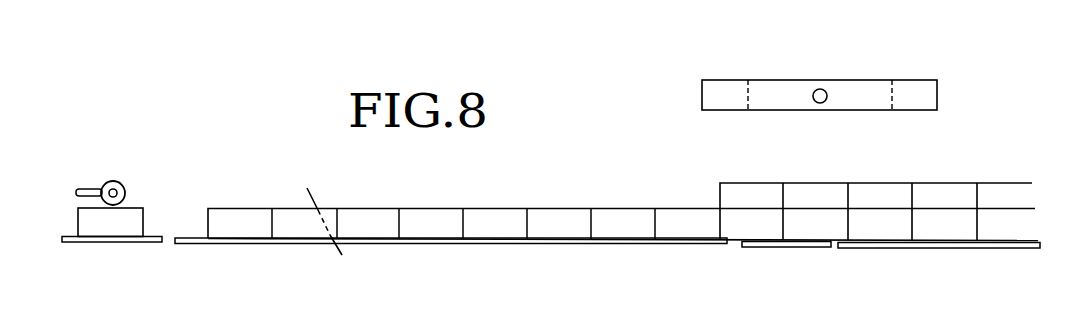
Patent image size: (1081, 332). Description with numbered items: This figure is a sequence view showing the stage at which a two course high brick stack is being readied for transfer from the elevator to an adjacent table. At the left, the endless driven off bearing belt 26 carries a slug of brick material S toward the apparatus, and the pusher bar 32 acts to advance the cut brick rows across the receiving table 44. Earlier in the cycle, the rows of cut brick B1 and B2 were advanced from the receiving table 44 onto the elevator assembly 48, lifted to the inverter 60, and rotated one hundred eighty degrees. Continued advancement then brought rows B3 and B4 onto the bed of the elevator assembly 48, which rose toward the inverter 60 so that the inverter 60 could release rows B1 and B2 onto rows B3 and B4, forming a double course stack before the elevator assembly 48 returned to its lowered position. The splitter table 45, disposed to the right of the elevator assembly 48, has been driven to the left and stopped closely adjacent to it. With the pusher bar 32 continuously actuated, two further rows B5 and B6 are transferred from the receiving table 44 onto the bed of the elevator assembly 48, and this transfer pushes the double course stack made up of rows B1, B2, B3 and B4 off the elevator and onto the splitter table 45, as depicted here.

The off bearing belt 26 is at (119, 242).
The pusher bar 32 is at (94, 189).
The brick slug S is at (133, 222).
The receiving table 44 is at (583, 244).
The elevator assembly 48 is at (787, 253).
The splitter table 45 is at (957, 245).
The inverter 60 is at (980, 86).
The row of cut brick B1 is at (751, 196).
The row of cut brick B2 is at (815, 196).
The row of cut brick B3 is at (815, 224).
The row of cut brick B4 is at (751, 224).
The row of cut brick B5 is at (687, 224).
The row of cut brick B6 is at (623, 224).